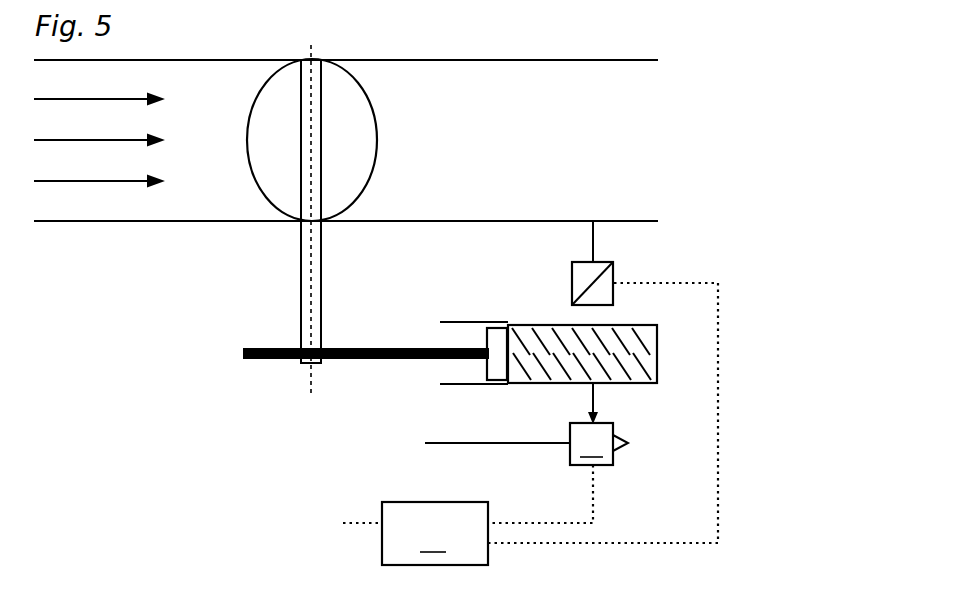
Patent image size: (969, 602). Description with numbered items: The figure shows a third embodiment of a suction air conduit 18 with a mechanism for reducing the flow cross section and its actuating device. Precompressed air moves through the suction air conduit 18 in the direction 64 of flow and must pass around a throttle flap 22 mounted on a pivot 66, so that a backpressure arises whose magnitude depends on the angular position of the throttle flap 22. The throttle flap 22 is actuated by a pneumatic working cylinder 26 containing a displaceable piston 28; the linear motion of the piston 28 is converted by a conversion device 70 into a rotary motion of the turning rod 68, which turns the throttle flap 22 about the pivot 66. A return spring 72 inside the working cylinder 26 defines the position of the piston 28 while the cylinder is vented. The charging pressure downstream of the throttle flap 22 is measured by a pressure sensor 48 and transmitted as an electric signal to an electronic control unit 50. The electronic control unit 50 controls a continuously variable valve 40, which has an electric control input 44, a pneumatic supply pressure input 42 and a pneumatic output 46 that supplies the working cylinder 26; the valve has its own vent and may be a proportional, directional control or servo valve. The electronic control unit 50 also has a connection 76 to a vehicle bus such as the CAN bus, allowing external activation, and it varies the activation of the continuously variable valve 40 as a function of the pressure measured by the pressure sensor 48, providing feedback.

The suction air conduit 18 is at (130, 223).
The throttle flap 22 is at (378, 120).
The working cylinder 26 is at (632, 327).
The piston 28 is at (493, 366).
The continuously variable valve 40 is at (599, 444).
The pneumatic supply pressure input 42 is at (560, 440).
The electric control input 44 is at (596, 476).
The pneumatic output 46 is at (598, 423).
The pressure sensor 48 is at (568, 265).
The electronic control unit 50 is at (550, 424).
The direction of flow 64 is at (165, 103).
The pivot 66 is at (318, 52).
The turning rod 68 is at (300, 262).
The conversion device 70 is at (291, 370).
The return spring 72 is at (635, 352).
The connection 76 is at (340, 527).